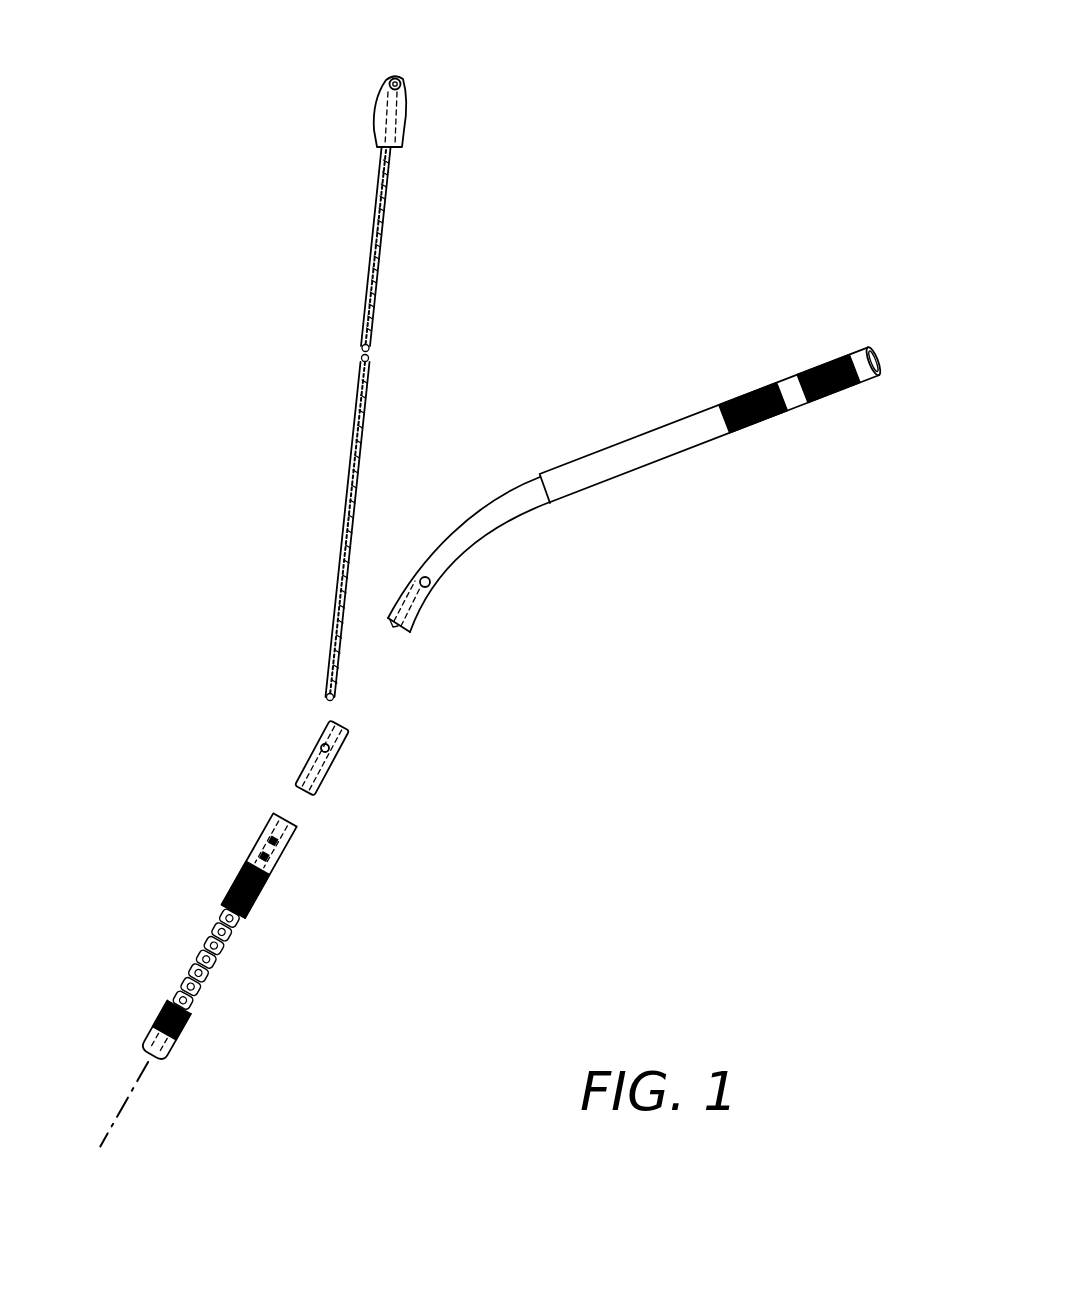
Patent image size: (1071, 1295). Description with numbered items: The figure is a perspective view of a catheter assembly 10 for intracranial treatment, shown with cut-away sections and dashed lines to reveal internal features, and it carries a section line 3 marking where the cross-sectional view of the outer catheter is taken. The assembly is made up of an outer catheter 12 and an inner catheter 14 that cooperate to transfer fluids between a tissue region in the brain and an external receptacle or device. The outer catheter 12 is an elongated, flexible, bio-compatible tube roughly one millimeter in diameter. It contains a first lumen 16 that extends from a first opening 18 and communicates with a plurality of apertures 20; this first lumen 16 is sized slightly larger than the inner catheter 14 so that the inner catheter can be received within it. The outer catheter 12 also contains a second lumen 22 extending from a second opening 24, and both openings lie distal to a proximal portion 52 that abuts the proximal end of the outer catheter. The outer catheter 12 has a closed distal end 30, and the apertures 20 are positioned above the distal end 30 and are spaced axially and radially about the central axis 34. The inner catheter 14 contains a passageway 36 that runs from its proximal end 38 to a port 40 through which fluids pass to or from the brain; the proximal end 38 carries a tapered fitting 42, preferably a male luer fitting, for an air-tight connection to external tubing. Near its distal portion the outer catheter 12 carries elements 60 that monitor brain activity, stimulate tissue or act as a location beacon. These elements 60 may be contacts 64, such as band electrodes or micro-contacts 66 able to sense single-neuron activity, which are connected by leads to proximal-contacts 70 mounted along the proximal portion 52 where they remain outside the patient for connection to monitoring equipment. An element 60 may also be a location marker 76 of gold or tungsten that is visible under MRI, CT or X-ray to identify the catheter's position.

The catheter assembly 10 is at (200, 233).
The outer catheter 12 is at (666, 449).
The inner catheter 14 is at (475, 243).
The first lumen 16 is at (246, 953).
The first opening 18 is at (340, 743).
The apertures 20 is at (173, 998).
The second lumen 22 is at (410, 617).
The second opening 24 is at (437, 580).
The distal end 30 is at (150, 1065).
The central axis 34 is at (130, 1085).
The passageway 36 is at (378, 308).
The proximal end 38 is at (388, 82).
The port 40 is at (327, 695).
The tapered fitting 42 is at (388, 78).
The proximal portion 52 is at (860, 352).
The elements 60 is at (240, 878).
The contacts 64 is at (253, 903).
The micro-contacts 66 is at (262, 863).
The proximal-contacts 70 is at (833, 393).
The location marker 76 is at (187, 1023).
The section line 3- 3 is at (331, 734).